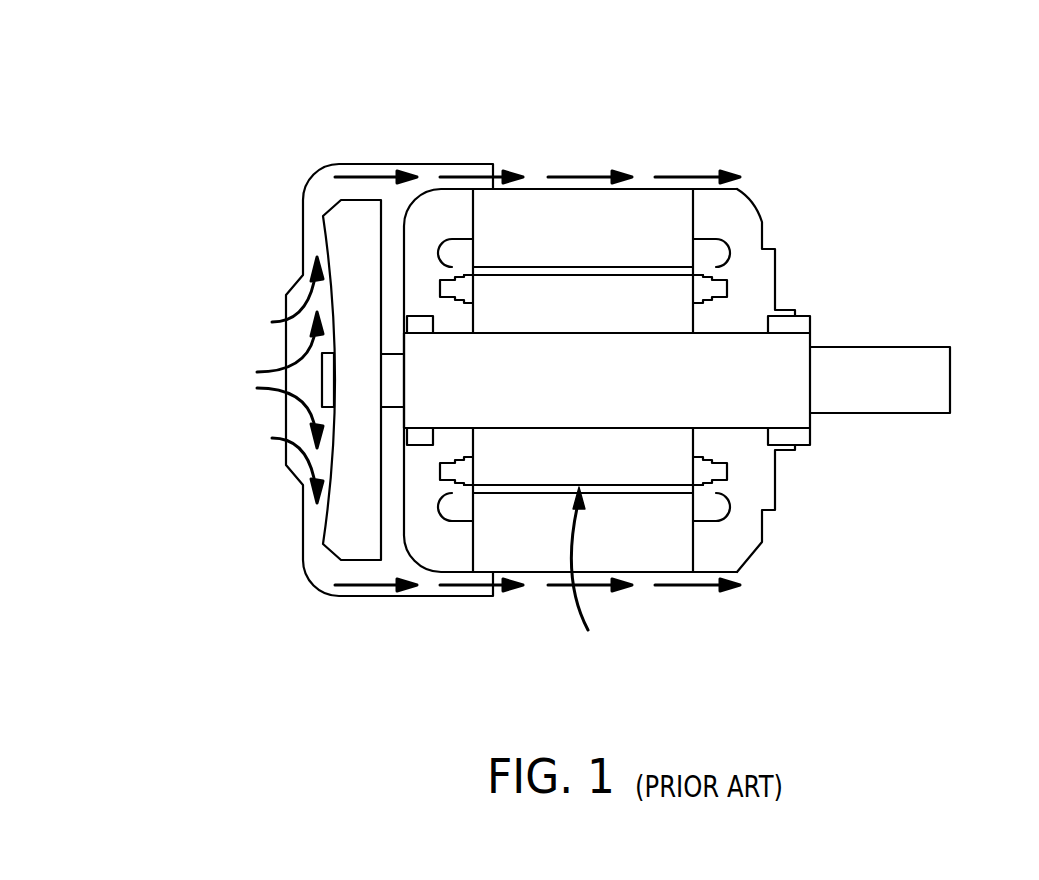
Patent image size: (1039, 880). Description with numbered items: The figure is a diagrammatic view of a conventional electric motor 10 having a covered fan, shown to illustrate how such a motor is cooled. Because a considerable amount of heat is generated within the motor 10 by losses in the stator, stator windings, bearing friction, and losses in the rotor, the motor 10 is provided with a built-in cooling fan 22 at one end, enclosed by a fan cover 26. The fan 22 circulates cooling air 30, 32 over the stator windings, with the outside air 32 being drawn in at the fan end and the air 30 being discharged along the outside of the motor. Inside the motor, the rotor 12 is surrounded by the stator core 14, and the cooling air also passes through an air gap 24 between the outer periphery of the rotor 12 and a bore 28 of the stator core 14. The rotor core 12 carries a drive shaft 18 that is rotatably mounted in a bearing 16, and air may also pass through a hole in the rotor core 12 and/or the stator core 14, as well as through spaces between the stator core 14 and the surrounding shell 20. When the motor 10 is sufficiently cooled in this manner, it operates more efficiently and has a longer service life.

The motor 10 is at (704, 134).
The rotor 12 is at (700, 288).
The stator core 14 is at (678, 550).
The bearing 16 is at (810, 432).
The drive shaft 18 is at (928, 365).
The shell 20 is at (775, 483).
The cooling fan 22 is at (350, 238).
The air gap 24 is at (390, 547).
The fan cover 26 is at (375, 164).
The bore 28 is at (588, 578).
The cooling air 30 is at (533, 585).
The cooling air 32 is at (243, 380).